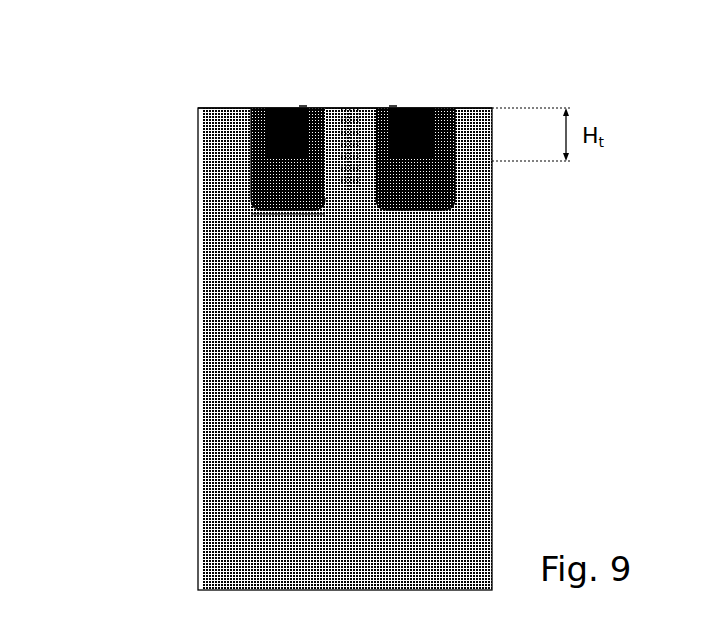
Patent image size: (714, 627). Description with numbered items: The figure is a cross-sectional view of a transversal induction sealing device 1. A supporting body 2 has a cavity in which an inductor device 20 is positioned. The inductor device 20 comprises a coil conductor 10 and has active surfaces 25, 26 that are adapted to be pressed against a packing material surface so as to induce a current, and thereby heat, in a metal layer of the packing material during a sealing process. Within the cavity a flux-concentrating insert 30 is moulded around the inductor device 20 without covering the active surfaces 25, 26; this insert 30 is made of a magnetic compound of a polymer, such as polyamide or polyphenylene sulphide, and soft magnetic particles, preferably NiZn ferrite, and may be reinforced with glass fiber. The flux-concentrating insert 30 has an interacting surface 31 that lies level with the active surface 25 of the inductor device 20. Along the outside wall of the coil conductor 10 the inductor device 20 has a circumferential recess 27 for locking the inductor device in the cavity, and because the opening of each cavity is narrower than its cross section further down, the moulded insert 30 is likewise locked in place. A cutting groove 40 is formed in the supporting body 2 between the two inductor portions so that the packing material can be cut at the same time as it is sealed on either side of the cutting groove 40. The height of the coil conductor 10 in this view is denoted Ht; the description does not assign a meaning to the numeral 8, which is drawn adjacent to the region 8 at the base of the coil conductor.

The transversal induction sealing device 1 is at (136, 207).
The supporting body 2 is at (425, 365).
The drift region 8 is at (274, 208).
The coil conductor 10 is at (242, 165).
The inductor device 20 is at (385, 100).
The active surface 25 is at (275, 100).
The active surface 26 is at (295, 100).
The circumferential recess 27 is at (296, 131).
The flux-concentrating insert 30 is at (305, 203).
The interacting surface 31 is at (223, 100).
The cutting groove 40 is at (349, 149).